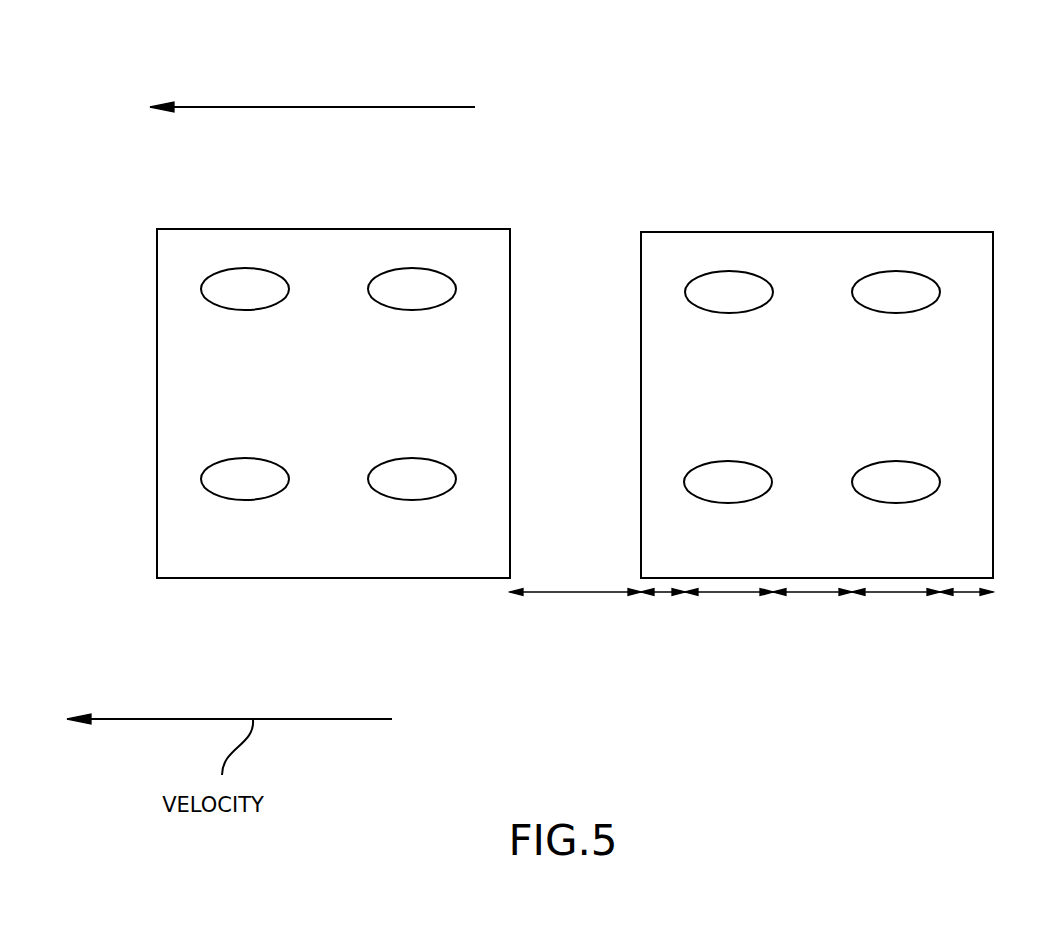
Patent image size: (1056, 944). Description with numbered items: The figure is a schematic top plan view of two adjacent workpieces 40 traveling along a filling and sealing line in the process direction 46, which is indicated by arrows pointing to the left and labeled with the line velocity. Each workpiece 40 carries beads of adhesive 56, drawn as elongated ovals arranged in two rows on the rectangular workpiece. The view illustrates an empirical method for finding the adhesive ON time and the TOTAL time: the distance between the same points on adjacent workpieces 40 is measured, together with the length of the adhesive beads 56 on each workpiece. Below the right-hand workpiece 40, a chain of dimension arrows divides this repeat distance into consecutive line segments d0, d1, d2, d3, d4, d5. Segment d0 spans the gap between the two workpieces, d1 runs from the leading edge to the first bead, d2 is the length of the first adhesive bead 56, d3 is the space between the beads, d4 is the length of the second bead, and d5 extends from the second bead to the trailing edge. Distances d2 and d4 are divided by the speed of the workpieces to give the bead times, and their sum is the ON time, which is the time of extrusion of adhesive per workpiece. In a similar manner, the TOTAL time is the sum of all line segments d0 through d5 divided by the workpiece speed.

The workpiece 40 is at (838, 232).
The process direction 46 is at (354, 107).
The adhesive bead 56 is at (727, 283).
The line segment d0 is at (570, 598).
The line segment d1 is at (653, 598).
The distance d2 is at (725, 598).
The line segment d3 is at (815, 598).
The distance d4 is at (900, 598).
The line segment d5 is at (965, 598).